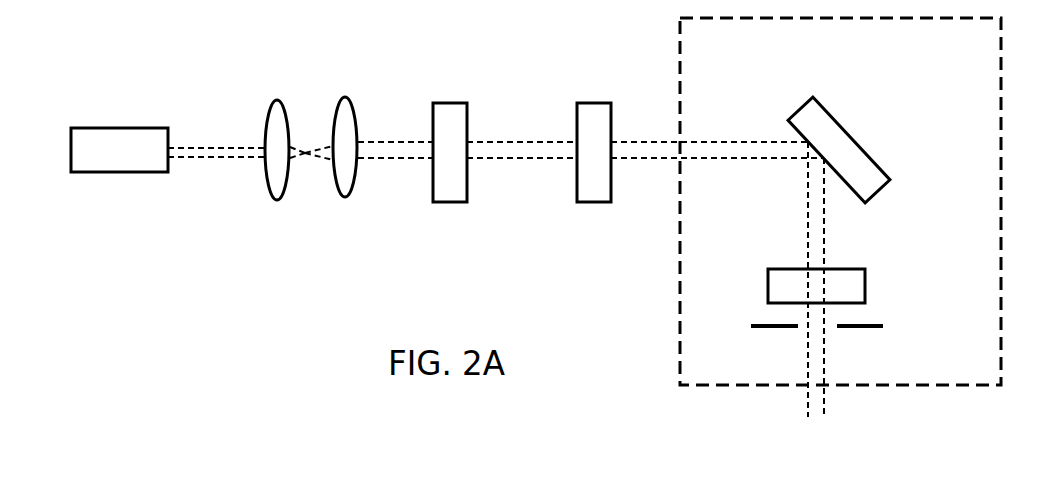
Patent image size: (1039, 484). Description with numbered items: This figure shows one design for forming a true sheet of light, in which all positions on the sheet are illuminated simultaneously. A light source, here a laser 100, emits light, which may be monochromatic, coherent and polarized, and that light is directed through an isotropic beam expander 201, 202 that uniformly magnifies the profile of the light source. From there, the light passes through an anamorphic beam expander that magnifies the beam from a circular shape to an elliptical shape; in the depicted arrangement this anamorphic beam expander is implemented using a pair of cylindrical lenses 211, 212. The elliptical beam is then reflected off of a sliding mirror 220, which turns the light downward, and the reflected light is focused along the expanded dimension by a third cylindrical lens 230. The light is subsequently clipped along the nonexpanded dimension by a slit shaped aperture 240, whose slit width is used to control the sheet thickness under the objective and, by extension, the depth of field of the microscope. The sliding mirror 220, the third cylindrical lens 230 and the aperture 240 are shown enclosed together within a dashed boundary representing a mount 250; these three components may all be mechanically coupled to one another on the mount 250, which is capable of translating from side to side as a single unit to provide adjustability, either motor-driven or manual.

The laser 100 is at (157, 122).
The isotropic beam expander 201 is at (278, 98).
The isotropic beam expander 202 is at (345, 97).
The cylindrical lens 211 is at (447, 103).
The cylindrical lens 212 is at (597, 103).
The sliding mirror 220 is at (840, 120).
The third cylindrical lens 230 is at (843, 268).
The slit shaped aperture 240 is at (868, 325).
The mount 250 is at (678, 240).